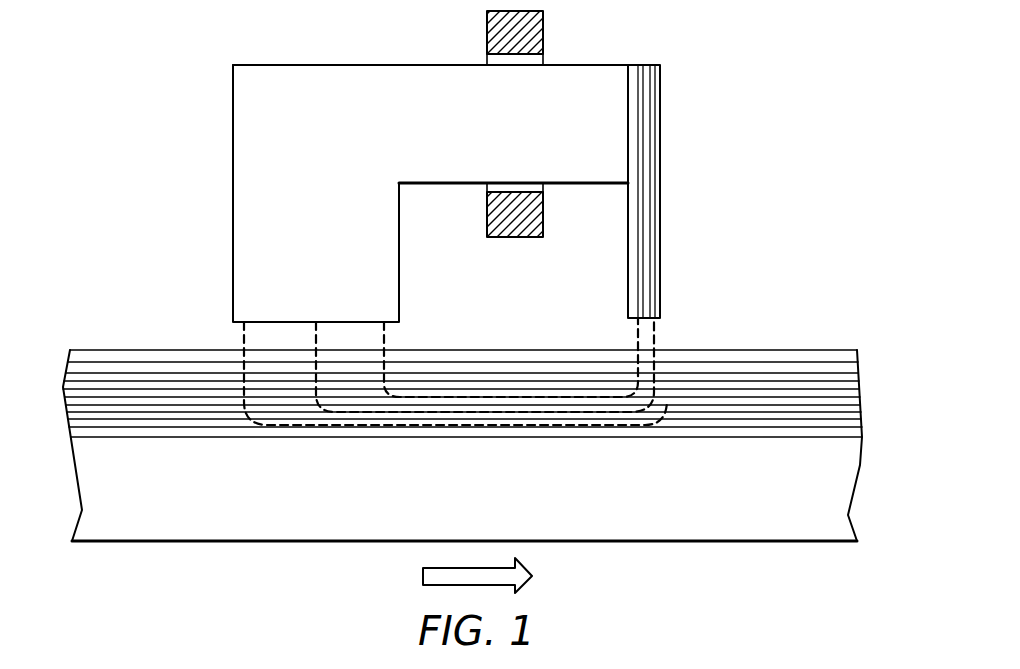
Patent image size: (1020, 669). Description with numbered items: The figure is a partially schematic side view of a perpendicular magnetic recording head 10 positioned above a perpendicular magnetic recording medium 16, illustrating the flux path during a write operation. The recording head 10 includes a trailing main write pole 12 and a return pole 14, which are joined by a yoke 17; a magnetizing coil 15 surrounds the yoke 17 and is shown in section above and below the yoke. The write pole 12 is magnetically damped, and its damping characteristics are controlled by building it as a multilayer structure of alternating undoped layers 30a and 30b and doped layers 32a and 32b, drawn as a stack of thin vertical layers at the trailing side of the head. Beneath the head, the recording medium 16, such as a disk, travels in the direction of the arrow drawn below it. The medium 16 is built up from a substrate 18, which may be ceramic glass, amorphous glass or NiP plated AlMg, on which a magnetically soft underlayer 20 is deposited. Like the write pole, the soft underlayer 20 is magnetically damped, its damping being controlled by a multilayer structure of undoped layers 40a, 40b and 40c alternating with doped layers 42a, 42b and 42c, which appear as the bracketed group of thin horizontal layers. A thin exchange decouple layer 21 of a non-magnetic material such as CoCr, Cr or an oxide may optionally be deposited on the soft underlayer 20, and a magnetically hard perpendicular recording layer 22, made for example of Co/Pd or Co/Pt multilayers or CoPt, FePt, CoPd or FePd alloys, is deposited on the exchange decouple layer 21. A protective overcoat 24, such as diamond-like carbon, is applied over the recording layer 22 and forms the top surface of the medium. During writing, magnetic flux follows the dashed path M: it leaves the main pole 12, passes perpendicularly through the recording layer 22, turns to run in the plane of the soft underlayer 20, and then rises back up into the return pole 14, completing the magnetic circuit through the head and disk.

The perpendicular magnetic recording head 10 is at (174, 76).
The trailing main write pole 12 is at (674, 297).
The return pole 14 is at (243, 277).
The magnetizing coil 15 is at (545, 33).
The perpendicular magnetic recording medium 16 is at (104, 318).
The yoke 17 is at (452, 110).
The substrate 18 is at (843, 488).
The magnetically soft underlayer 20 is at (866, 385).
The exchange decouple layer 21 is at (850, 380).
The magnetically hard perpendicular recording layer 22 is at (850, 365).
The protective overcoat 24 is at (836, 352).
The undoped layer 30a is at (655, 237).
The undoped layer 30b is at (640, 210).
The doped layer 32a is at (650, 158).
The doped layer 32b is at (633, 127).
The undoped layer 40a is at (667, 392).
The undoped layer 40b is at (674, 408).
The undoped layer 40c is at (687, 423).
The doped layer 42a is at (753, 397).
The doped layer 42b is at (780, 415).
The doped layer 42c is at (825, 430).
The magnetic flux path M is at (488, 410).